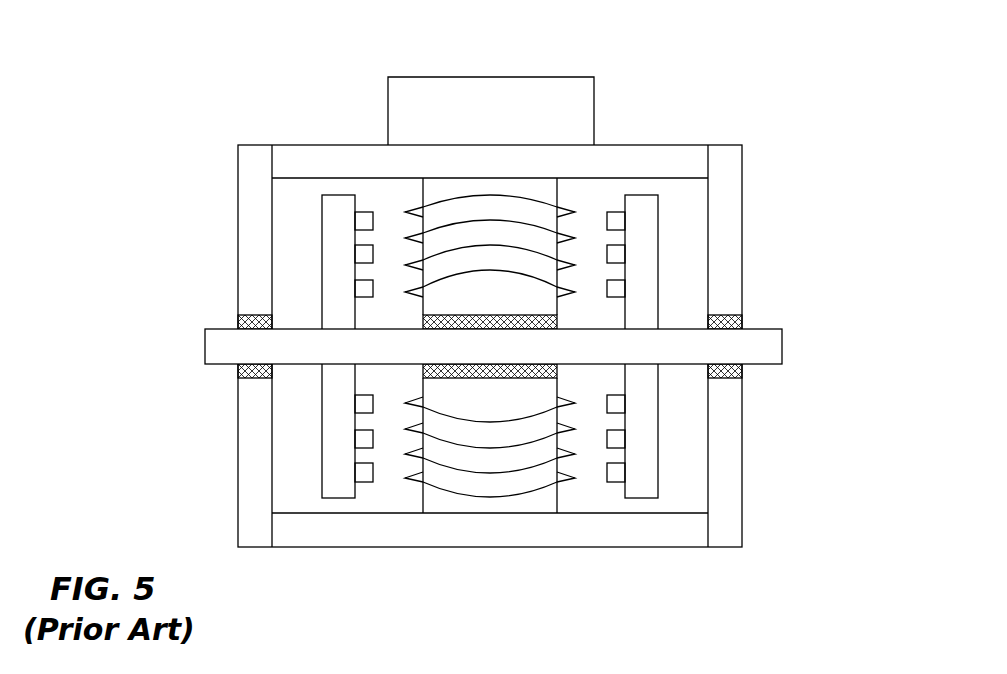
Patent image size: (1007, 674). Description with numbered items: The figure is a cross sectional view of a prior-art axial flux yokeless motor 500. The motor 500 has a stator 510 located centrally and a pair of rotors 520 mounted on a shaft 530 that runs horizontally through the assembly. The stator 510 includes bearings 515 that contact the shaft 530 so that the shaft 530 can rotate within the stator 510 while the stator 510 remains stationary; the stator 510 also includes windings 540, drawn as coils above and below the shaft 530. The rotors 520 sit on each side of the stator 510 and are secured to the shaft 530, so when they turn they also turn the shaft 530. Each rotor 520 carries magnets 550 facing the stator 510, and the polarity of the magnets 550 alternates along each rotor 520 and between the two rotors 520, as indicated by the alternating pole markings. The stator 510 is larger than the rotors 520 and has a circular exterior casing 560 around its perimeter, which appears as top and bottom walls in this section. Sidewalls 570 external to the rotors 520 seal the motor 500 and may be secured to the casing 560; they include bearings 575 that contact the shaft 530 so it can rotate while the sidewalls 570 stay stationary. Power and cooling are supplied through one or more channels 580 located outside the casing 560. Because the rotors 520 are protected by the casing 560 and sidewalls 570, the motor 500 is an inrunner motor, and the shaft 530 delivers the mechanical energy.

The axial flux yokeless motor 500 is at (170, 116).
The stator 510 is at (532, 505).
The bearings 515 is at (423, 322).
The rotors 520 is at (640, 210).
The shaft 530 is at (752, 347).
The windings 540 is at (457, 492).
The magnets 550 is at (365, 212).
The circular exterior casing 560 is at (607, 162).
The sidewalls 570 is at (725, 263).
The bearings 575 is at (238, 322).
The channels 580 is at (572, 90).